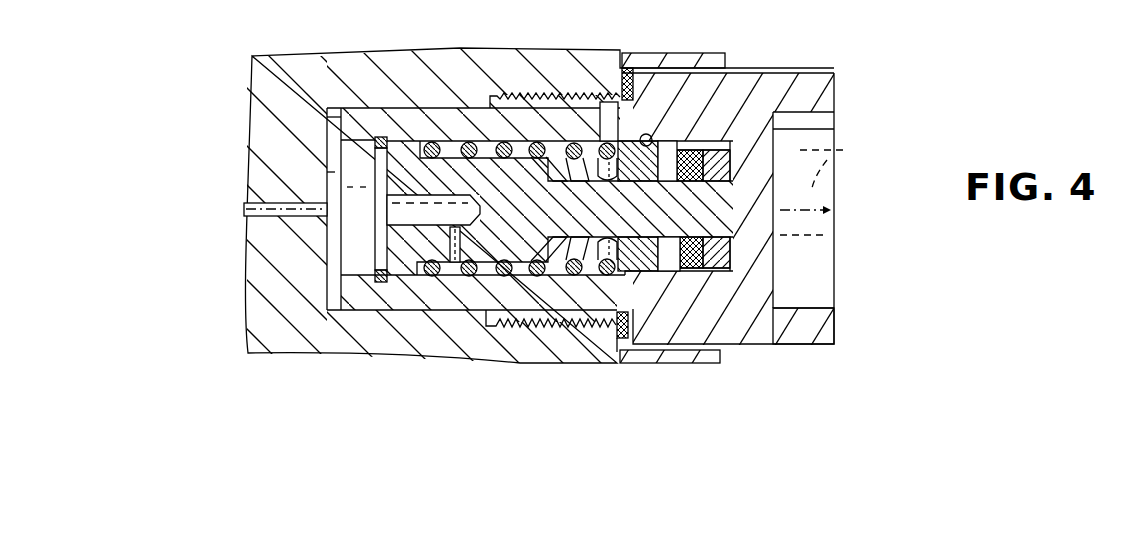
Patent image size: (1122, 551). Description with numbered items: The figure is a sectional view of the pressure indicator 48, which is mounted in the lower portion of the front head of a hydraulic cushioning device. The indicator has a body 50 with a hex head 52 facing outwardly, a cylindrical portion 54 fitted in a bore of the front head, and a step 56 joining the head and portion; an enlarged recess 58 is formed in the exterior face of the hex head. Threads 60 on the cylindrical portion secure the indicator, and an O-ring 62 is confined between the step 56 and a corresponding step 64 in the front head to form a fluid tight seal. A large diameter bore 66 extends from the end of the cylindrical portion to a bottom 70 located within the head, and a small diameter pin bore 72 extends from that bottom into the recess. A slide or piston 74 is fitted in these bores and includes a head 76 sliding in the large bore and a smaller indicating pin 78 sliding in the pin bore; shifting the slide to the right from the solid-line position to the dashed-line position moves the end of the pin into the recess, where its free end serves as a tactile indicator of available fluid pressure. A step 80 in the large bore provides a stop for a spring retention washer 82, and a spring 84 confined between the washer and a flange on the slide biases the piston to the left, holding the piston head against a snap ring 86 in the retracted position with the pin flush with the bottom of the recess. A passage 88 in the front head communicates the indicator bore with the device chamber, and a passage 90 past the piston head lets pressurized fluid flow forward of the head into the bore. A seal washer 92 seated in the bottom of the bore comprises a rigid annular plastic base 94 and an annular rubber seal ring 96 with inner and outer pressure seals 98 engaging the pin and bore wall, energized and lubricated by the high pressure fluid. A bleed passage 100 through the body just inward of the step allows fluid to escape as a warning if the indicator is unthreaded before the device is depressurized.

The pressure indicator 48 is at (820, 352).
The body 50 is at (730, 359).
The hex head 52 is at (828, 74).
The cylindrical portion 54 is at (374, 312).
The step 56 is at (627, 66).
The enlarged recess 58 is at (810, 307).
The threads 60 is at (537, 323).
The O-ring 62 is at (570, 128).
The step 64 is at (627, 98).
The large diameter bore 66 is at (448, 143).
The bottom 70 is at (722, 281).
The small diameter pin bore 72 is at (773, 222).
The slide or piston 74 is at (375, 242).
The head 76 is at (375, 162).
The indicating pin 78 is at (852, 150).
The step 80 is at (651, 135).
The spring retention washer 82 is at (685, 150).
The spring 84 is at (490, 146).
The snap ring 86 is at (375, 271).
The passage 88 is at (247, 208).
The passage 90 is at (456, 235).
The seal washer 92 is at (699, 278).
The rigid annular plastic base 94 is at (836, 118).
The annular rubber seal ring 96 is at (712, 150).
The annular rubber pressure seals 98 is at (682, 242).
The bleed passage 100 is at (552, 96).